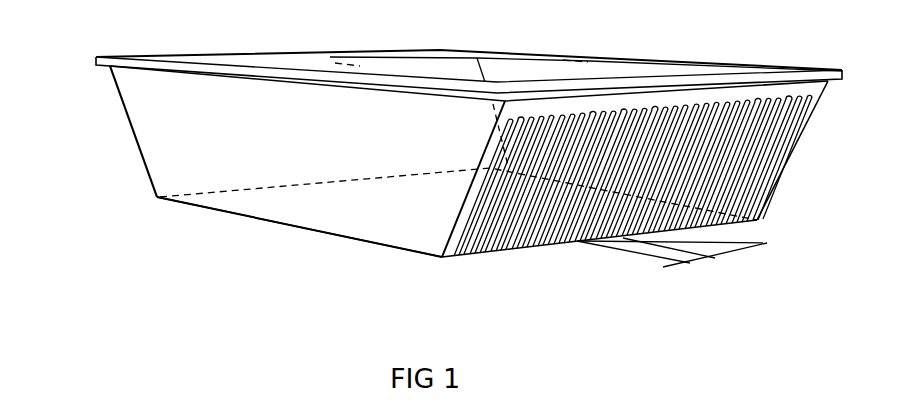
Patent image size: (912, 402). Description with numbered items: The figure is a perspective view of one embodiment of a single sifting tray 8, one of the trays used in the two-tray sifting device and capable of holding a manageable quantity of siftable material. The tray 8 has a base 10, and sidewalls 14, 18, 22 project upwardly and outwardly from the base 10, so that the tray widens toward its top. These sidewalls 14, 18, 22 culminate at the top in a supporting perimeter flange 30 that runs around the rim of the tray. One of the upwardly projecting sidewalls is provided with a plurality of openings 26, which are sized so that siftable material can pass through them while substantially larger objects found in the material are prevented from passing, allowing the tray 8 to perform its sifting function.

The tray 8 is at (315, 237).
The base 10 is at (418, 228).
The sidewall 14 is at (190, 99).
The sidewall 18 is at (735, 143).
The sidewall 22 is at (290, 52).
The openings 26 is at (723, 254).
The supporting perimeter flange 30 is at (387, 86).